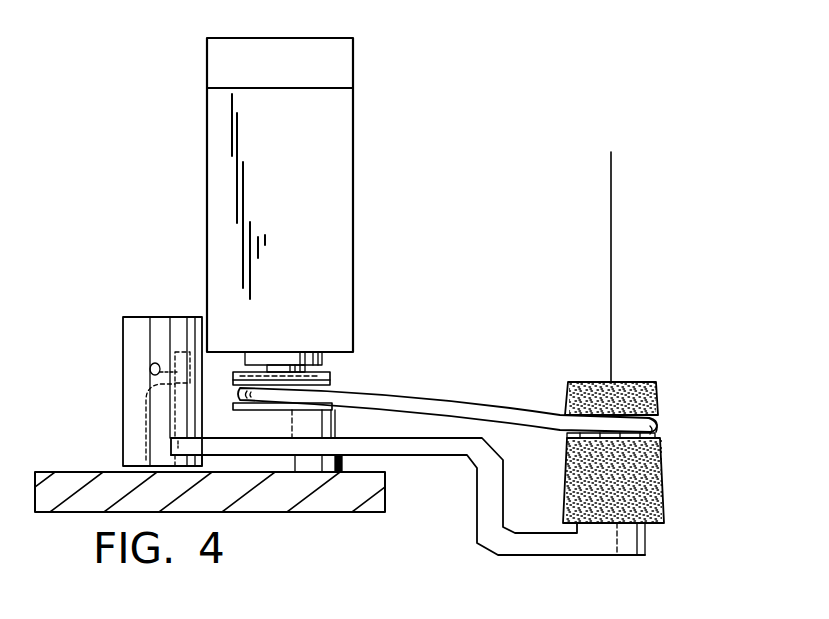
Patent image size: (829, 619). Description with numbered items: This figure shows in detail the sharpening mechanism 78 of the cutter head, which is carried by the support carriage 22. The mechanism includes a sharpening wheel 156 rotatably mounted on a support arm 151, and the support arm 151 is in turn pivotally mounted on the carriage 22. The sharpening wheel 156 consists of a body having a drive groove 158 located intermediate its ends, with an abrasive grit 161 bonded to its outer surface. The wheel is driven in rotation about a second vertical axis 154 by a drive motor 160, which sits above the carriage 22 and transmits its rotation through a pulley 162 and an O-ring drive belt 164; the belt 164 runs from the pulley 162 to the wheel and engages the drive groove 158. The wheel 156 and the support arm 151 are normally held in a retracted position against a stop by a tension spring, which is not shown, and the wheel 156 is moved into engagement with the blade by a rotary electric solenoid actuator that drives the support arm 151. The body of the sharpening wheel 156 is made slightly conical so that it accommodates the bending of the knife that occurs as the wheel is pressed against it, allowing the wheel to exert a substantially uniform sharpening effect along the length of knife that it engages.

The drive motor 160 is at (353, 64).
The sharpening mechanism 78 is at (440, 180).
The pulley 162 is at (330, 372).
The O-ring drive belt 164 is at (430, 398).
The second vertical axis 154 is at (613, 328).
The drive groove 158 is at (652, 430).
The abrasive grit 161 is at (646, 468).
The sharpening wheel 156 is at (662, 498).
The support carriage 22 is at (113, 478).
The support arm 151 is at (532, 546).